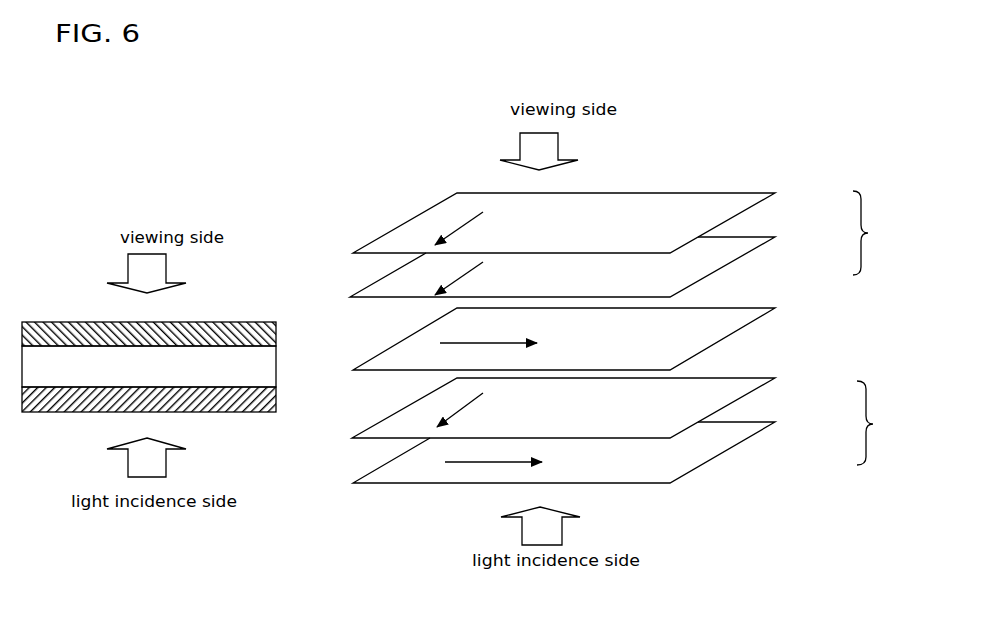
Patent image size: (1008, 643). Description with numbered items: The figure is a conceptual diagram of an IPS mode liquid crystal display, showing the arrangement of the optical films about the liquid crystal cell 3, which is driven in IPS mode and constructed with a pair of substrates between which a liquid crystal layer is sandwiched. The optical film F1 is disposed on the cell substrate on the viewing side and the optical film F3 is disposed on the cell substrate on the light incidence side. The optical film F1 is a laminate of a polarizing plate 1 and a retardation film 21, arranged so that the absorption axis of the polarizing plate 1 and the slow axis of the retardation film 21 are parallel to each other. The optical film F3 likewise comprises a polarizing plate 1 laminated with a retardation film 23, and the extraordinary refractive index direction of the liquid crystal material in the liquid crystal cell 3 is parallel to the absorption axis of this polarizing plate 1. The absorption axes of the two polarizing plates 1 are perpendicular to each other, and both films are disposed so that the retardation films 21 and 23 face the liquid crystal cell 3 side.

The polarizing plate 1 is at (682, 222).
The retardation film 21 is at (680, 270).
The retardation film 23 is at (682, 415).
The liquid crystal cell 3 is at (276, 368).
The optical film F1 is at (276, 333).
The optical film F3 is at (276, 400).